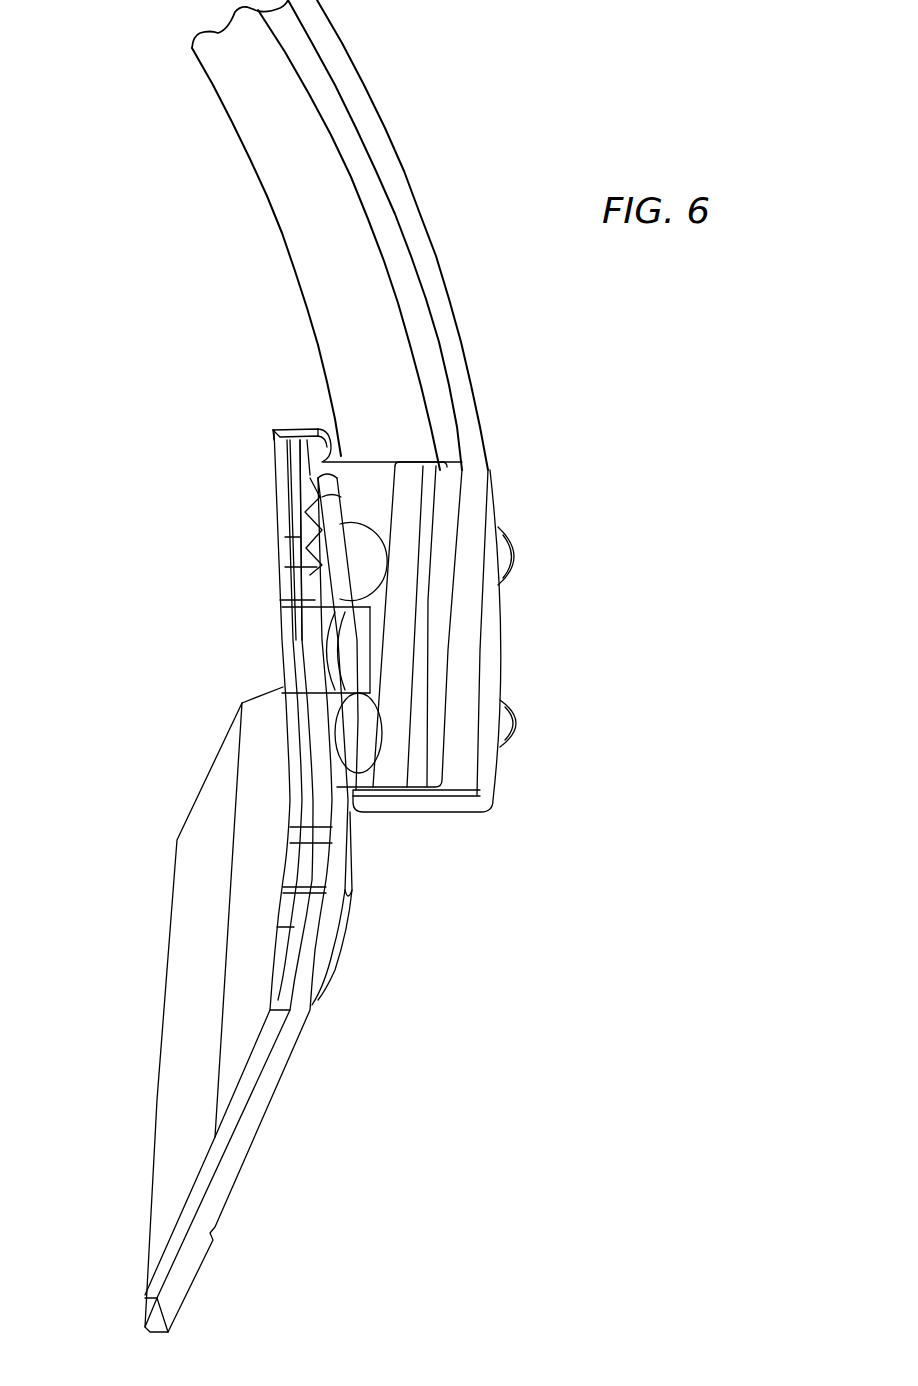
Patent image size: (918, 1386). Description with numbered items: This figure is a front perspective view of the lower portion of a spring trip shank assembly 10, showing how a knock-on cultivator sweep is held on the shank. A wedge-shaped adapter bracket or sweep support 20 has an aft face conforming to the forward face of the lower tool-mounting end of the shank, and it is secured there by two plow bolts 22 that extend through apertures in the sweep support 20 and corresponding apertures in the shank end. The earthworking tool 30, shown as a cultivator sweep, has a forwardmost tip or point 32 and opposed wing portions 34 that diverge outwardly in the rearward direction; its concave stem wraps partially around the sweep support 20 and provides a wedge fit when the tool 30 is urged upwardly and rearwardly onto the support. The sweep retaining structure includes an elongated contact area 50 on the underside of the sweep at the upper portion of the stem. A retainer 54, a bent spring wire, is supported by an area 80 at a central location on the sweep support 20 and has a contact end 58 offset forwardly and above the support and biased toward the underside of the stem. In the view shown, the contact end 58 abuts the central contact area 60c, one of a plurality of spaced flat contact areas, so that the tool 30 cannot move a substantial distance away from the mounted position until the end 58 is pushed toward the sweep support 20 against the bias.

The spring trip shank assembly 10 is at (128, 236).
The sweep support 20 is at (412, 500).
The plow bolts 22 is at (524, 550).
The earthworking tool 30 is at (172, 1060).
The point 32 is at (143, 1327).
The wing portions 34 is at (262, 702).
The contact area 50 is at (337, 457).
The retainer 54 is at (340, 566).
The contact end 58 is at (312, 480).
The central contact area 60c is at (312, 463).
The area 80 is at (330, 633).